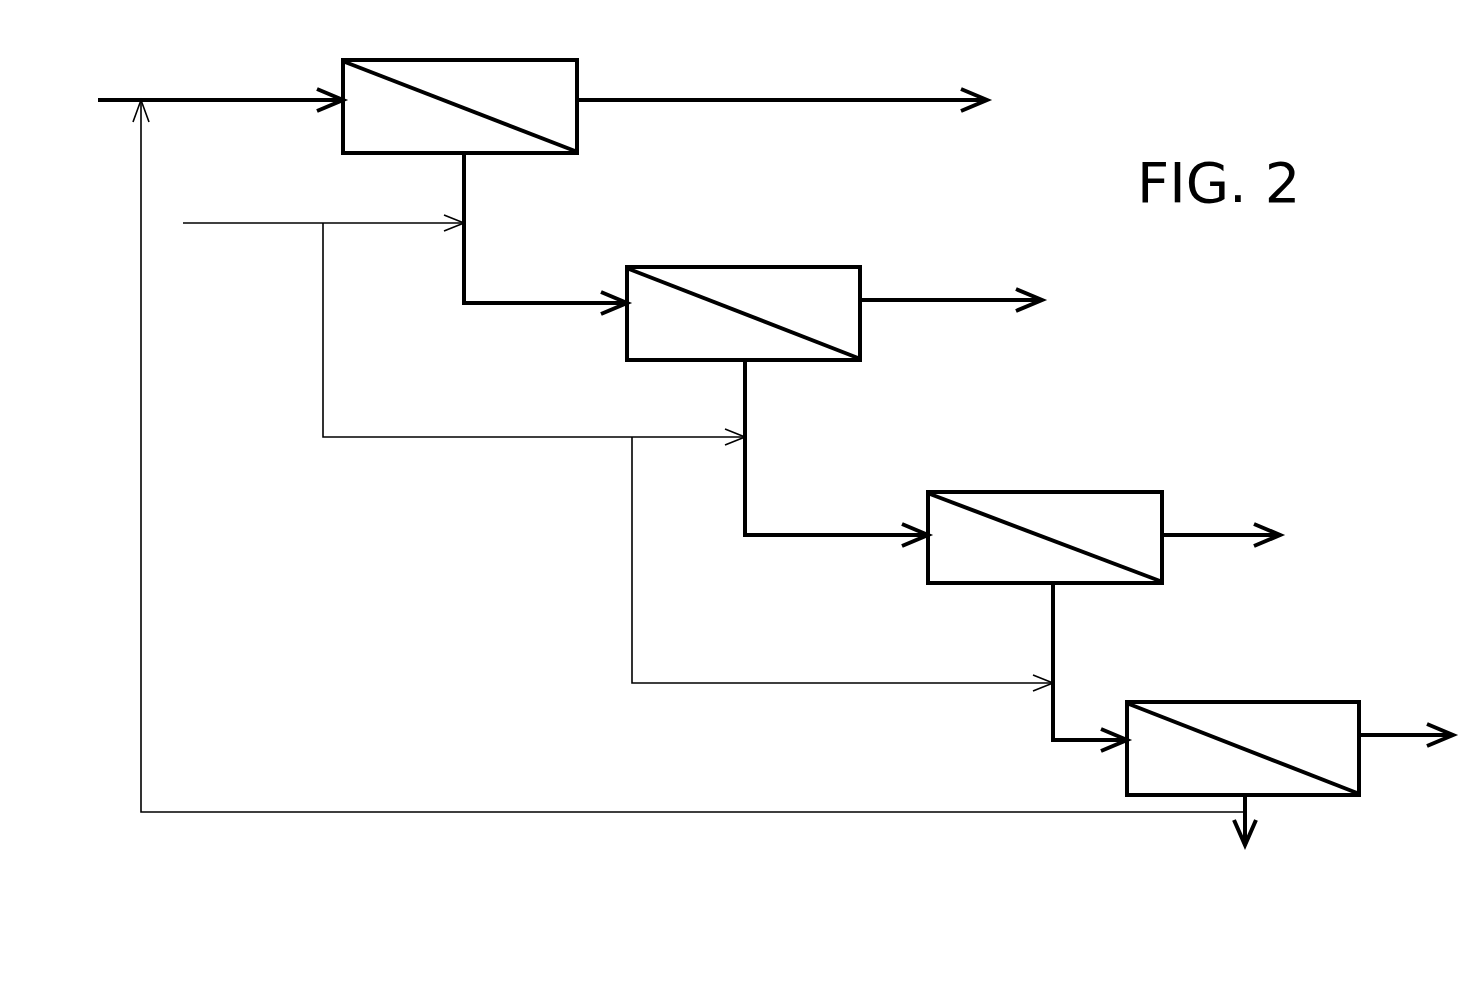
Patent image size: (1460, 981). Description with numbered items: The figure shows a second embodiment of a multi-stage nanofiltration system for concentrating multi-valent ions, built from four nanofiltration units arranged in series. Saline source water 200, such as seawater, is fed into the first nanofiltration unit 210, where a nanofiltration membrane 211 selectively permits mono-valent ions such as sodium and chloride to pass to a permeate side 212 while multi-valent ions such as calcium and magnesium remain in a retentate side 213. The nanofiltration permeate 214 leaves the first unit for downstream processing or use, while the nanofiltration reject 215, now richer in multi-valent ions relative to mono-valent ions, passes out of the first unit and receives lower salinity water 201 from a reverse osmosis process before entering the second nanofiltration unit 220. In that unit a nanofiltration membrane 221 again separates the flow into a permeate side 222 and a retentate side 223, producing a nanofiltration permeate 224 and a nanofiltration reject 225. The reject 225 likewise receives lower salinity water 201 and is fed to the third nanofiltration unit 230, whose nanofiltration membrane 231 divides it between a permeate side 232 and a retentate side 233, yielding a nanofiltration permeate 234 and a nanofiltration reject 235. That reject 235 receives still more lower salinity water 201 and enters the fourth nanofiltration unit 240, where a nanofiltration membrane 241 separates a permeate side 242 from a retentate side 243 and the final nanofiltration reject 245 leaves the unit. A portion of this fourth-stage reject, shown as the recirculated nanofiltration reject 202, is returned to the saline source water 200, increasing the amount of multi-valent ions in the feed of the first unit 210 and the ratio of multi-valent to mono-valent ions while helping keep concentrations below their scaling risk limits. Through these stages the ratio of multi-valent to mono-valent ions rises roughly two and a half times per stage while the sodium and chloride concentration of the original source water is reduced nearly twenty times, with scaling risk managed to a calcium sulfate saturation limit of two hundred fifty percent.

The saline source water 200 is at (133, 95).
The lower salinity water 201 is at (258, 222).
The recirculated nanofiltration reject 202 is at (290, 810).
The first nanofiltration unit 210 is at (400, 57).
The nanofiltration membrane 211 is at (478, 109).
The nanofiltration unit permeate side 212 is at (480, 83).
The nanofiltration unit retentate side 213 is at (388, 122).
The nanofiltration permeate 214 is at (705, 98).
The nanofiltration reject 215 is at (467, 192).
The second nanofiltration unit 220 is at (706, 265).
The nanofiltration membrane 221 is at (770, 318).
The nanofiltration unit permeate side 222 is at (755, 283).
The nanofiltration unit retentate side 223 is at (666, 334).
The nanofiltration permeate 224 is at (920, 296).
The nanofiltration reject 225 is at (748, 398).
The third nanofiltration unit 230 is at (993, 488).
The nanofiltration membrane 231 is at (1077, 540).
The nanofiltration unit permeate side 232 is at (1050, 512).
The nanofiltration unit retentate side 233 is at (965, 552).
The nanofiltration permeate 234 is at (1190, 530).
The nanofiltration reject 235 is at (1056, 618).
The fourth nanofiltration unit 240 is at (1185, 700).
The nanofiltration membrane 241 is at (1267, 752).
The nanofiltration unit permeate side 242 is at (1242, 718).
The nanofiltration unit retentate side 243 is at (1158, 762).
The nanofiltration reject 245 is at (1248, 805).